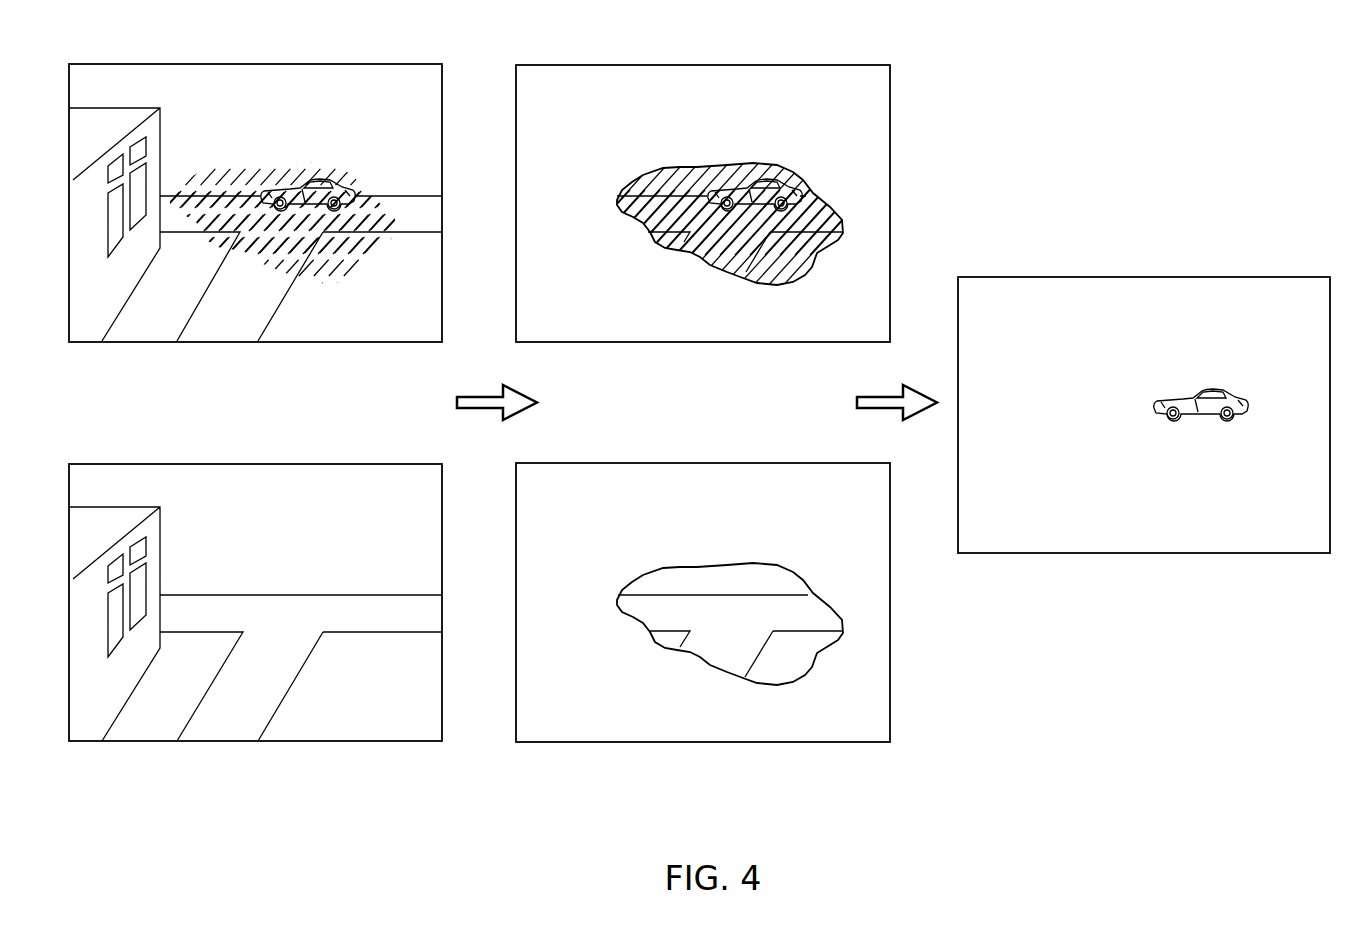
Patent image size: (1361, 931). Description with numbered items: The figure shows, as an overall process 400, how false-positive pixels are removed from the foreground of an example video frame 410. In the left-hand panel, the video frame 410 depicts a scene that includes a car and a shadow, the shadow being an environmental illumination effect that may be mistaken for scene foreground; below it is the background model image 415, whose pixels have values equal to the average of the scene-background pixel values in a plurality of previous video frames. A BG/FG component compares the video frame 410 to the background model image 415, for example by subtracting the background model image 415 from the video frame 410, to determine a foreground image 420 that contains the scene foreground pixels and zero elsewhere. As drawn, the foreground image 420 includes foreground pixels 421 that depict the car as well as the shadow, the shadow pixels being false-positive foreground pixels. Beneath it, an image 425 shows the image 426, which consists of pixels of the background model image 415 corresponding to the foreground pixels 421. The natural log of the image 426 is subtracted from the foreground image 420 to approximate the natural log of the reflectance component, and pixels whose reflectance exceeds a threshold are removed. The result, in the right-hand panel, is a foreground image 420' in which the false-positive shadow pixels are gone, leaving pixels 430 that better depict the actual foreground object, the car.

The moving object detection process 400 is at (1194, 98).
The video frame 410 is at (217, 64).
The background model image 415 is at (217, 464).
The foreground image 420 is at (717, 177).
The foreground pixels 421 is at (785, 165).
The detected region mask image 425 is at (703, 609).
The image 426 is at (785, 565).
The foreground image 420' is at (1144, 516).
The pixels 430 is at (1193, 385).